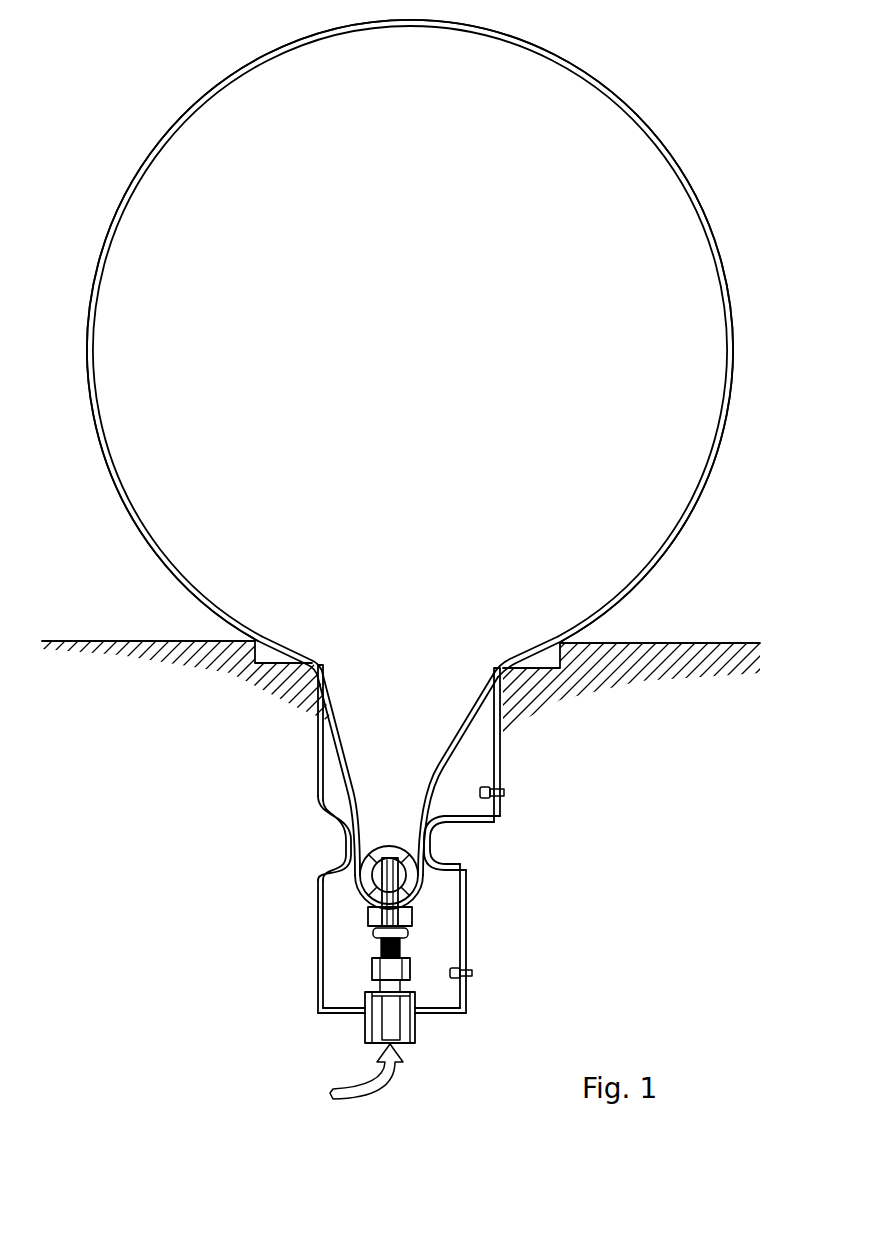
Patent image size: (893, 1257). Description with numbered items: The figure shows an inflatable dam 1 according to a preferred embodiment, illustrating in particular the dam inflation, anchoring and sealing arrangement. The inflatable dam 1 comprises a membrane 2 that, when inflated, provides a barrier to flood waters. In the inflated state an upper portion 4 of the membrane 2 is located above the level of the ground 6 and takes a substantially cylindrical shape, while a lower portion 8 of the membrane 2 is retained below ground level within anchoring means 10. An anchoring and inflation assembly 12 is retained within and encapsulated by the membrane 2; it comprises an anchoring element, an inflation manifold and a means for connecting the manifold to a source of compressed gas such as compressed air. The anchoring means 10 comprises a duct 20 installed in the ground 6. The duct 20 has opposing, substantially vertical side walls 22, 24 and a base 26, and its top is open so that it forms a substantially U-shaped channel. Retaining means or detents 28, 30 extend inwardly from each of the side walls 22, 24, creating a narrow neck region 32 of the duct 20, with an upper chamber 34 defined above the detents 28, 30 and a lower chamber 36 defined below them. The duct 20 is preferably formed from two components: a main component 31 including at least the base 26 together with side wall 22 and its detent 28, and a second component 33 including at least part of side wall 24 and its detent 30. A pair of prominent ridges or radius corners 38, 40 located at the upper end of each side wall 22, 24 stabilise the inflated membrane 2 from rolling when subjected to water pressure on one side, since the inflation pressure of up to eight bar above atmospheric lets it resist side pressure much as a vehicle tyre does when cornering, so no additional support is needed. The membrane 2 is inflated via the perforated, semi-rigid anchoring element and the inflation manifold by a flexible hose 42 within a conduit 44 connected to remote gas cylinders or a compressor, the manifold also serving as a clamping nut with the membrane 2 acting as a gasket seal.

The inflatable dam 1 is at (686, 76).
The membrane 2 is at (693, 202).
The upper portion 4 is at (711, 463).
The ground 6 is at (693, 706).
The lower portion 8 is at (452, 762).
The anchoring means 10 is at (386, 972).
The anchoring and inflation assembly 12 is at (415, 886).
The duct 20 is at (390, 866).
The side wall 22 is at (318, 940).
The side wall 24 is at (468, 864).
The base 26 is at (435, 1015).
The detent 28 is at (345, 836).
The detent 30 is at (432, 838).
The main component 31 is at (320, 878).
The neck region 32 is at (384, 826).
The second component 33 is at (445, 820).
The upper chamber 34 is at (333, 776).
The lower chamber 36 is at (345, 990).
The prominent ridge/radius corner 38 is at (307, 678).
The prominent ridge/radius corner 40 is at (254, 648).
The flexible hose 42 is at (397, 1040).
The conduit 44 is at (368, 1033).